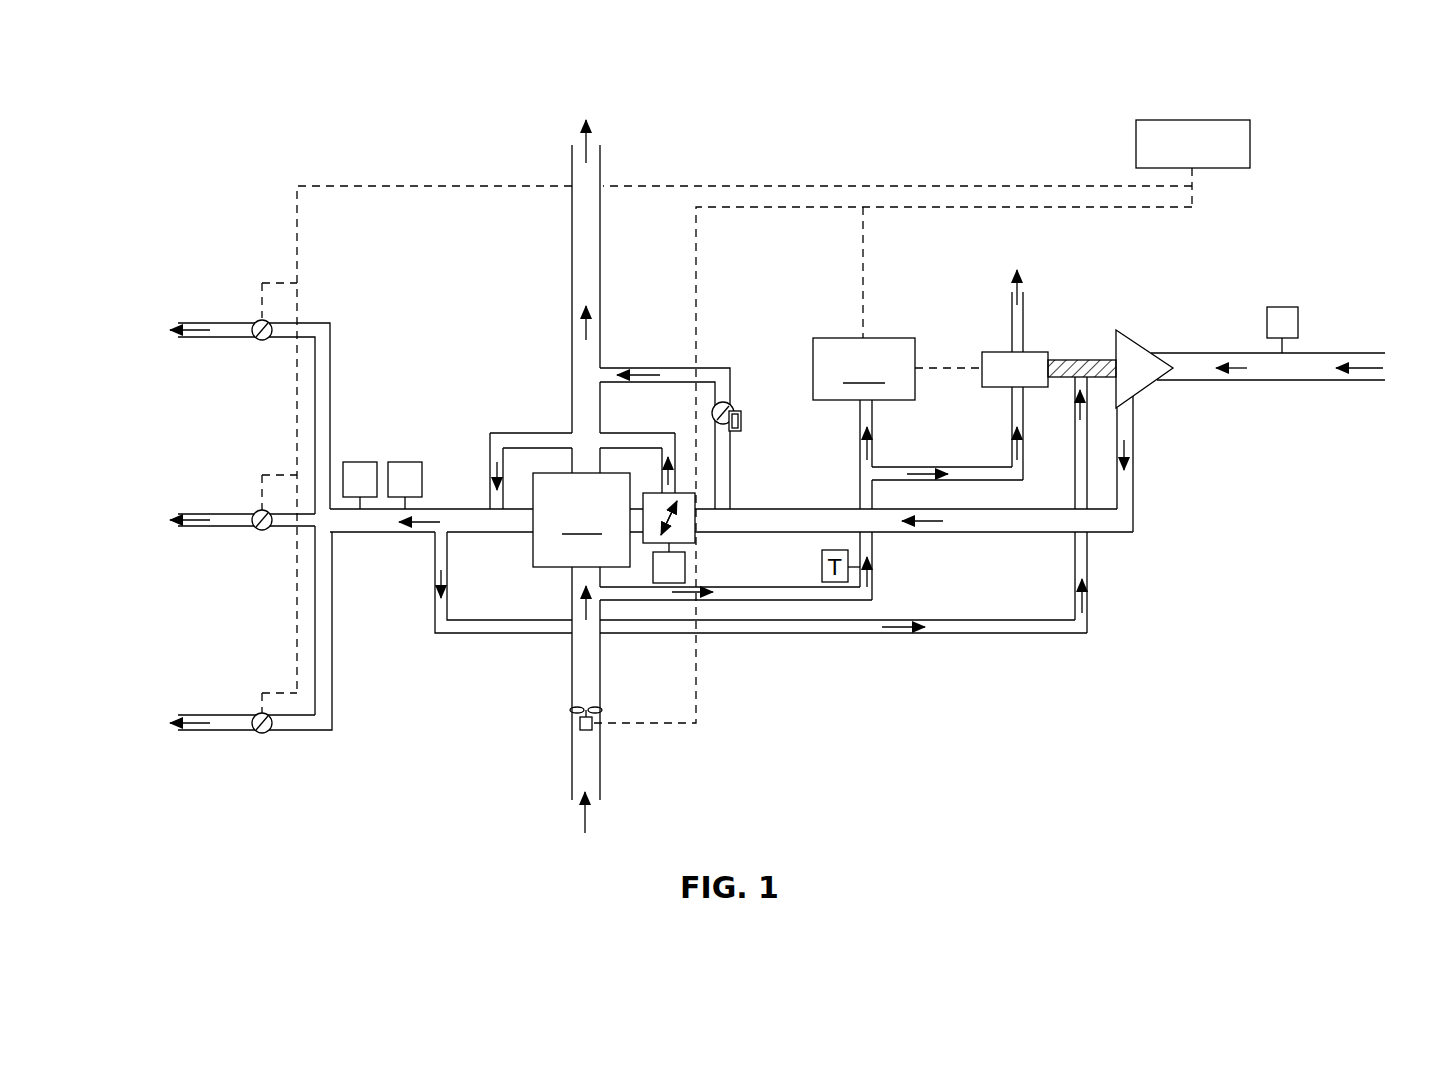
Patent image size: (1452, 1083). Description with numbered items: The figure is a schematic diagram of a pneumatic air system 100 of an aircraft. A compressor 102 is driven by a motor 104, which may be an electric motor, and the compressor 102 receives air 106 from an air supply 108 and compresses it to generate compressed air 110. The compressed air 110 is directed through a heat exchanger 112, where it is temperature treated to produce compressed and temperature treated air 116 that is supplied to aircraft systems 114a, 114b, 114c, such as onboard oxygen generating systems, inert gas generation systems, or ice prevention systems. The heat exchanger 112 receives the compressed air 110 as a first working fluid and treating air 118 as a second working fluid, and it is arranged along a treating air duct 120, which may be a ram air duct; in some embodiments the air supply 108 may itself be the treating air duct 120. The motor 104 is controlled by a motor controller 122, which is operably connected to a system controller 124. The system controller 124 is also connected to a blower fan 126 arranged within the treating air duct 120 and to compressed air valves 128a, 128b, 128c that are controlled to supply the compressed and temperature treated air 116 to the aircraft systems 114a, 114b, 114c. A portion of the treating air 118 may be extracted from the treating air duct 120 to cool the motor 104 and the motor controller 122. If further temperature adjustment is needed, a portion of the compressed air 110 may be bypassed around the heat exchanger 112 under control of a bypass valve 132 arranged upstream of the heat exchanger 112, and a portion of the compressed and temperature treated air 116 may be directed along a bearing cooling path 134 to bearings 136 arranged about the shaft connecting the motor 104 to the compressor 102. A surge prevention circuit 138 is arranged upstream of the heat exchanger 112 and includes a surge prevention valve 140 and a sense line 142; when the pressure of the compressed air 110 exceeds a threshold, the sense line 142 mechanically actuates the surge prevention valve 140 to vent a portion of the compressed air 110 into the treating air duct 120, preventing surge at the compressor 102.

The pneumatic air system 100 is at (148, 78).
The compressor 102 is at (1134, 352).
The motor 104 is at (990, 352).
The air 106 is at (1352, 365).
The air supply 108 is at (1437, 381).
The compressed air 110 is at (1134, 460).
The heat exchanger 112 is at (582, 500).
The aircraft system 114a is at (164, 330).
The aircraft system 114b is at (164, 520).
The aircraft system 114c is at (164, 723).
The compressed and temperature treated air 116 is at (412, 524).
The treating air 118 is at (586, 812).
The treating air duct 120 is at (572, 300).
The motor controller 122 is at (918, 469).
The system controller 124 is at (1235, 146).
The blower fan 126 is at (580, 724).
The compressed air valve 128a is at (262, 341).
The compressed air valve 128b is at (262, 531).
The compressed air valve 128c is at (262, 734).
The bypass valve 132 is at (688, 537).
The bearing cooling path 134 is at (436, 619).
The bearings 136 is at (1088, 360).
The surge prevention circuit 138 is at (727, 348).
The surge prevention valve 140 is at (738, 404).
The sense line 142 is at (744, 425).